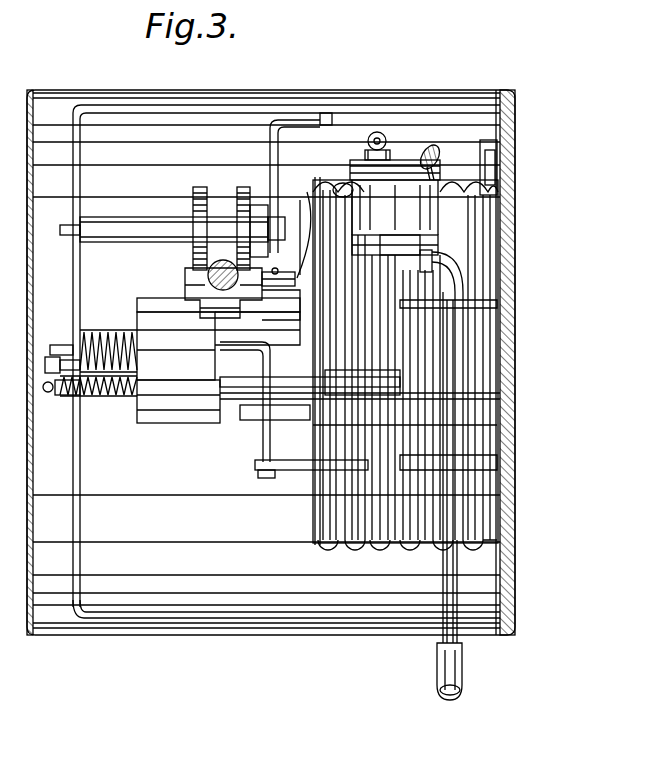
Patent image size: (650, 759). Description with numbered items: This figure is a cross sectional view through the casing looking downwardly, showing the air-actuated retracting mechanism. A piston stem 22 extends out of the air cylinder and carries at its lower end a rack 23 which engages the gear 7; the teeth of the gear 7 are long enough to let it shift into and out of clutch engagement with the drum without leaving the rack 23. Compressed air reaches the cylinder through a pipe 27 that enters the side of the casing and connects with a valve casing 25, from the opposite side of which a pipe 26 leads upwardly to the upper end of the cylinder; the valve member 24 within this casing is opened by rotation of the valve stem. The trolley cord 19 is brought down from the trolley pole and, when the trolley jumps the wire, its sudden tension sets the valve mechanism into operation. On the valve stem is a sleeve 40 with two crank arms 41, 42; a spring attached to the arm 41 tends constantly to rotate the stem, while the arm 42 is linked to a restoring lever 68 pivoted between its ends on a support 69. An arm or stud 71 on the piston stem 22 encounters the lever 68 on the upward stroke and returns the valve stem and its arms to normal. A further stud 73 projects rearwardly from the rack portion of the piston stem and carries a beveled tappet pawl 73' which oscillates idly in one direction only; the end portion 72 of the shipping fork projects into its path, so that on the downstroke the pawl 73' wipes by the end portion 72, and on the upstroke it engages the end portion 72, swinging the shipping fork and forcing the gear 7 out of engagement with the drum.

The gear 7 is at (117, 442).
The trolley cord 19 is at (438, 160).
The piston stem 22 is at (192, 272).
The rack 23 is at (190, 286).
The pipe 24 is at (400, 352).
The valve casing 25 is at (365, 170).
The pipe 26 is at (387, 140).
The pipe 27 is at (440, 662).
The sleeve 40 is at (380, 453).
The crank arm 41 is at (350, 430).
The crank arm 42 is at (220, 496).
The restoring lever 68 is at (265, 352).
The pivot support 69 is at (262, 413).
The arm or stud 71 is at (137, 308).
The end portion of shipping fork 72 is at (295, 292).
The stud 73 is at (296, 361).
The tappet pawl 73' is at (297, 228).